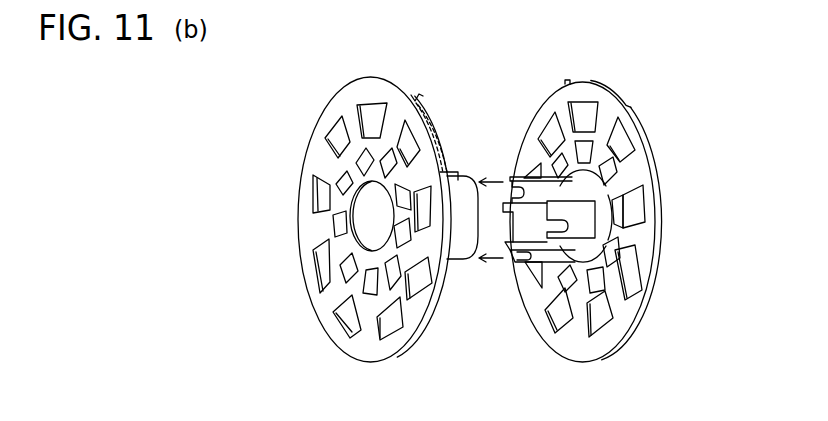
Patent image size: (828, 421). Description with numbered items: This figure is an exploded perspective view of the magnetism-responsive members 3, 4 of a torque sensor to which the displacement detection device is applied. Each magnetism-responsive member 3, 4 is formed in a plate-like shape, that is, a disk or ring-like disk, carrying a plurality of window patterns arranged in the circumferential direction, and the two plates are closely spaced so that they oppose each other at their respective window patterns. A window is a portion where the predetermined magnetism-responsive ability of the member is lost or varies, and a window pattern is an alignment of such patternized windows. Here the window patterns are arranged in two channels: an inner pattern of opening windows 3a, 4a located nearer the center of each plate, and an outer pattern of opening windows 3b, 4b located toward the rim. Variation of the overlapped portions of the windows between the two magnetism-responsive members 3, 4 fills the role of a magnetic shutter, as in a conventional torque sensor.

The magnetism-responsive member 3 is at (542, 97).
The opening window of inner pattern 3a is at (603, 177).
The opening window of outer pattern 3b is at (622, 142).
The magnetism-responsive member 4 is at (345, 83).
The opening window of inner pattern 4a is at (338, 178).
The opening window of outer pattern 4b is at (337, 136).